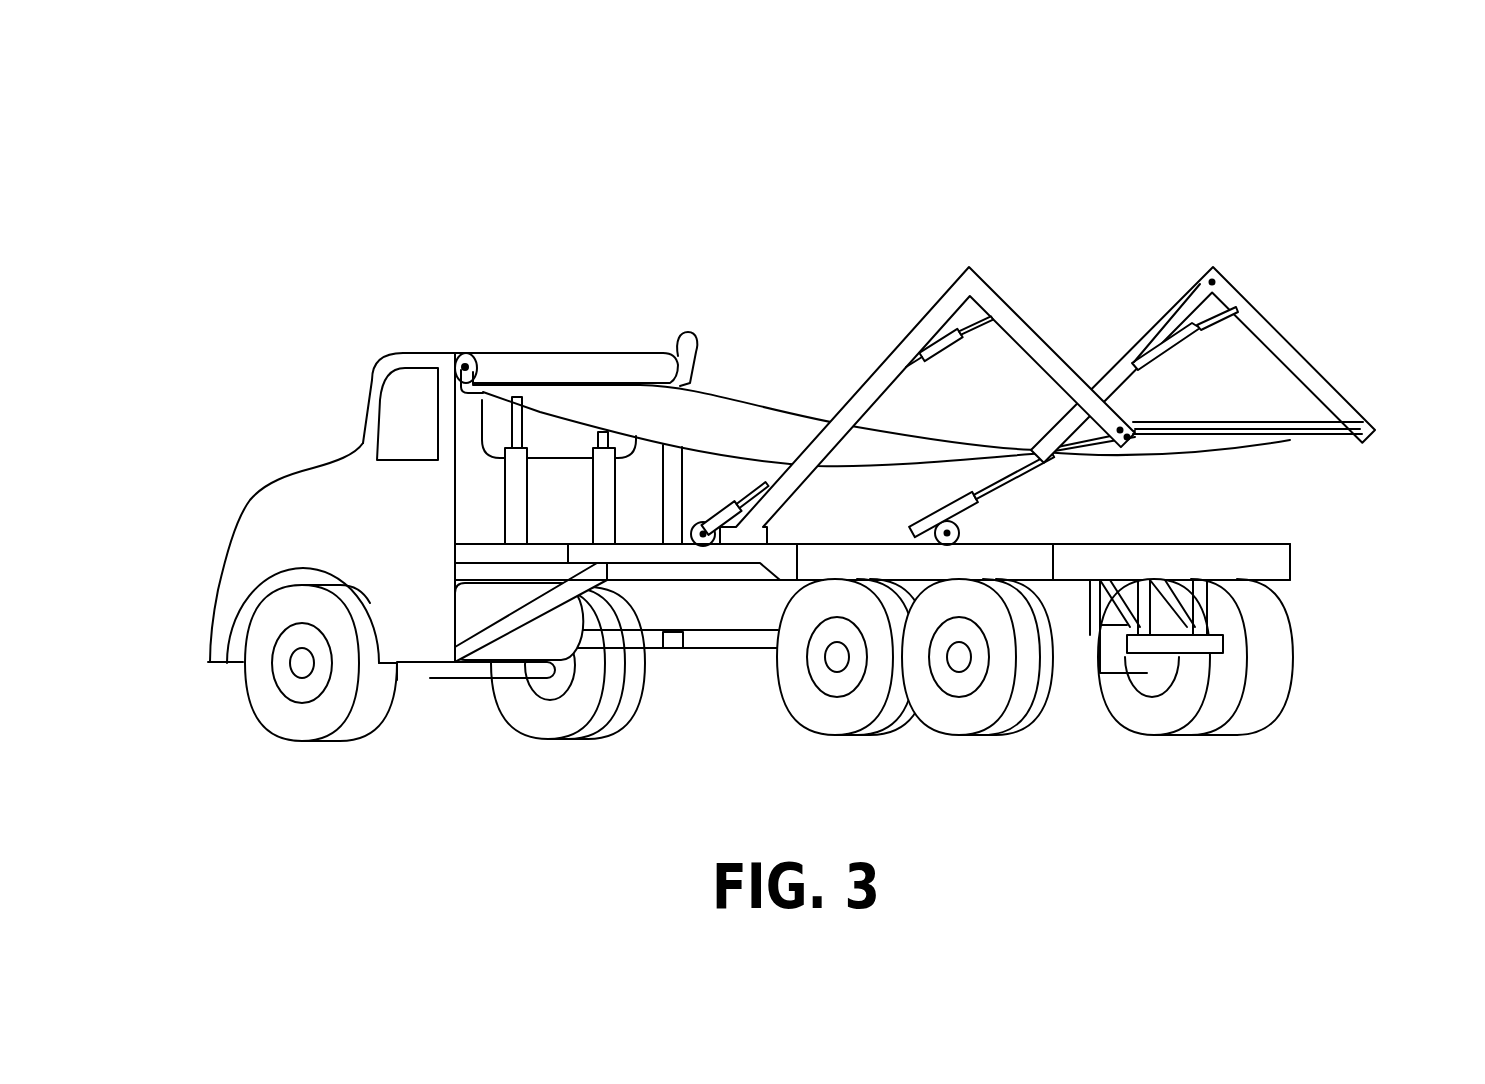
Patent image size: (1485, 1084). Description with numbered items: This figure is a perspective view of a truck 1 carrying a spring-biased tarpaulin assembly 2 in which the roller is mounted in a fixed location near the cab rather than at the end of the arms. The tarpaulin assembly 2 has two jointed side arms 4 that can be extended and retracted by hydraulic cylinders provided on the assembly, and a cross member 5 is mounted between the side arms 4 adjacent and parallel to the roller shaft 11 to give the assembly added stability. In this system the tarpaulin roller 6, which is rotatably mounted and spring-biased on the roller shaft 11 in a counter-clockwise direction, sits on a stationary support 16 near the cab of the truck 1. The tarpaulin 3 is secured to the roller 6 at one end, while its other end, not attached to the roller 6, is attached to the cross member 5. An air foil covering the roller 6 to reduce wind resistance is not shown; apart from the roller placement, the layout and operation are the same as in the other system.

The truck 1 is at (315, 353).
The tarpaulin assembly 2 is at (1079, 337).
The tarpaulin 3 is at (772, 427).
The side arms 4 is at (1042, 345).
The cross member 5 is at (1287, 427).
The tarpaulin roller 6 is at (563, 367).
The roller shaft 11 is at (460, 393).
The stationary support 16 is at (463, 393).